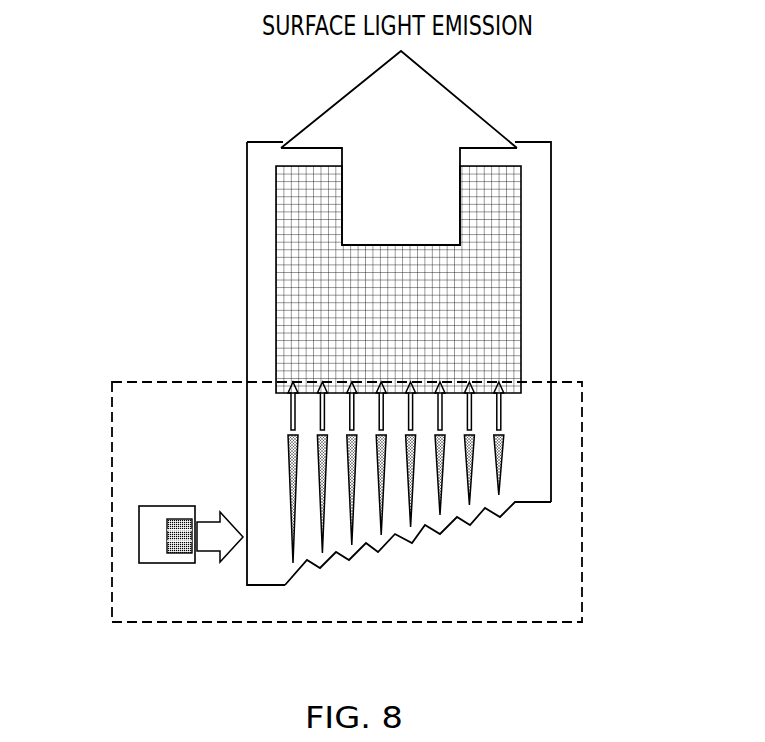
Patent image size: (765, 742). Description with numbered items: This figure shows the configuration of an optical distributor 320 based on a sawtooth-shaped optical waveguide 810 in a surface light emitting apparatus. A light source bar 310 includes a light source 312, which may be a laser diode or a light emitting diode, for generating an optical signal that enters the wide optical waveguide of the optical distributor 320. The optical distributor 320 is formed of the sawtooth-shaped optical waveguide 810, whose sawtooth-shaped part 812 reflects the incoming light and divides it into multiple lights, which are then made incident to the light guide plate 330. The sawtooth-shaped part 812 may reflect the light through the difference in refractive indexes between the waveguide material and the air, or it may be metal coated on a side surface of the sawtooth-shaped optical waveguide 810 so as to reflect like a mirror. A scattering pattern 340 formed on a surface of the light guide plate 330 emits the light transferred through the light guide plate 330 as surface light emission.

The light source bar 310 is at (139, 528).
The light source 312 is at (175, 553).
The optical distributor 320 is at (582, 453).
The light guide plate 330 is at (543, 244).
The scattering pattern 340 is at (508, 213).
The sawtooth-shaped optical waveguide 810 is at (268, 447).
The sawtooth-shaped part 812 is at (368, 549).